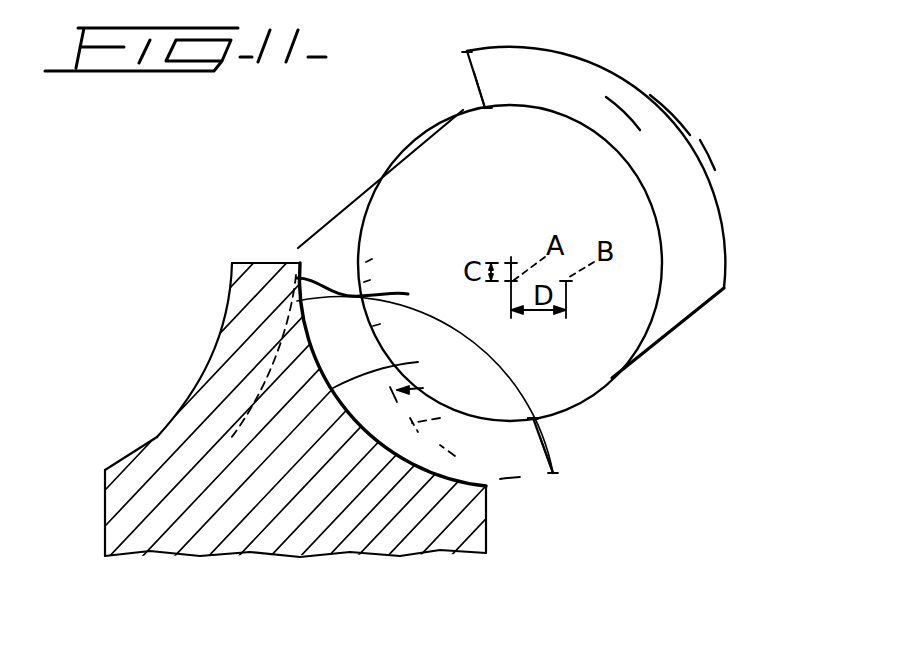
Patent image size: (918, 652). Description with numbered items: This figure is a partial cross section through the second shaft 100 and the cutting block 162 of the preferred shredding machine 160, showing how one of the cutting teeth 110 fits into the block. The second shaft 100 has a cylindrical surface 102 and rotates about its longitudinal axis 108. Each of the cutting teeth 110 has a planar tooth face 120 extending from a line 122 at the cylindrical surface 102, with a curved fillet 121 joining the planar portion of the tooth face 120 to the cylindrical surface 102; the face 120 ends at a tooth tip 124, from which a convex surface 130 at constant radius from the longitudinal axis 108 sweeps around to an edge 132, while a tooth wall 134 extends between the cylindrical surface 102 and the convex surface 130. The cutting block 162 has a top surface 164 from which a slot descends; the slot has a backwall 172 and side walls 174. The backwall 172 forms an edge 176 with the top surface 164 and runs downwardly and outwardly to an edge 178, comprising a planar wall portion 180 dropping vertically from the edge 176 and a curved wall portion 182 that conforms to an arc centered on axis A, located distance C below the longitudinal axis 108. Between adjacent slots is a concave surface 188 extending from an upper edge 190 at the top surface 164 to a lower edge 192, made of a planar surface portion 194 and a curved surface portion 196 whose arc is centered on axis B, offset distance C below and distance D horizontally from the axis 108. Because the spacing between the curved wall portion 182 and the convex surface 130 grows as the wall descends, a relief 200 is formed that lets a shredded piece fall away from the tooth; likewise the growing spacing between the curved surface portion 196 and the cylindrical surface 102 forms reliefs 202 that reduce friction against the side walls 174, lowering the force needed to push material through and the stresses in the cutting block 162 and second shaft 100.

The second shaft 100 is at (711, 139).
The cylindrical surface 102 is at (612, 379).
The longitudinal axis 108 is at (511, 263).
The cutting teeth 110 is at (672, 112).
The tooth face 120 is at (470, 71).
The curved fillet 121 is at (484, 100).
The line 122 is at (484, 109).
The tooth tip 124 is at (467, 51).
The convex surface 130 is at (566, 48).
The edge 132 is at (724, 290).
The tooth wall 134 is at (606, 97).
The shredding machine 160 is at (240, 178).
The cutting block 162 is at (258, 561).
The top surface 164 is at (247, 262).
The backwall 172 is at (265, 357).
The side walls 174 is at (373, 326).
The edge 176 is at (298, 262).
The edge 178 is at (110, 486).
The planar wall portion 180 is at (297, 287).
The curved wall portion 182 is at (135, 428).
The concave surface 188 is at (425, 387).
The upper edge 190 is at (233, 263).
The lower edge 192 is at (455, 456).
The planar surface portion 194 is at (232, 278).
The curved surface portion 196 is at (440, 418).
The relief 200 is at (520, 477).
The reliefs 202 is at (534, 417).